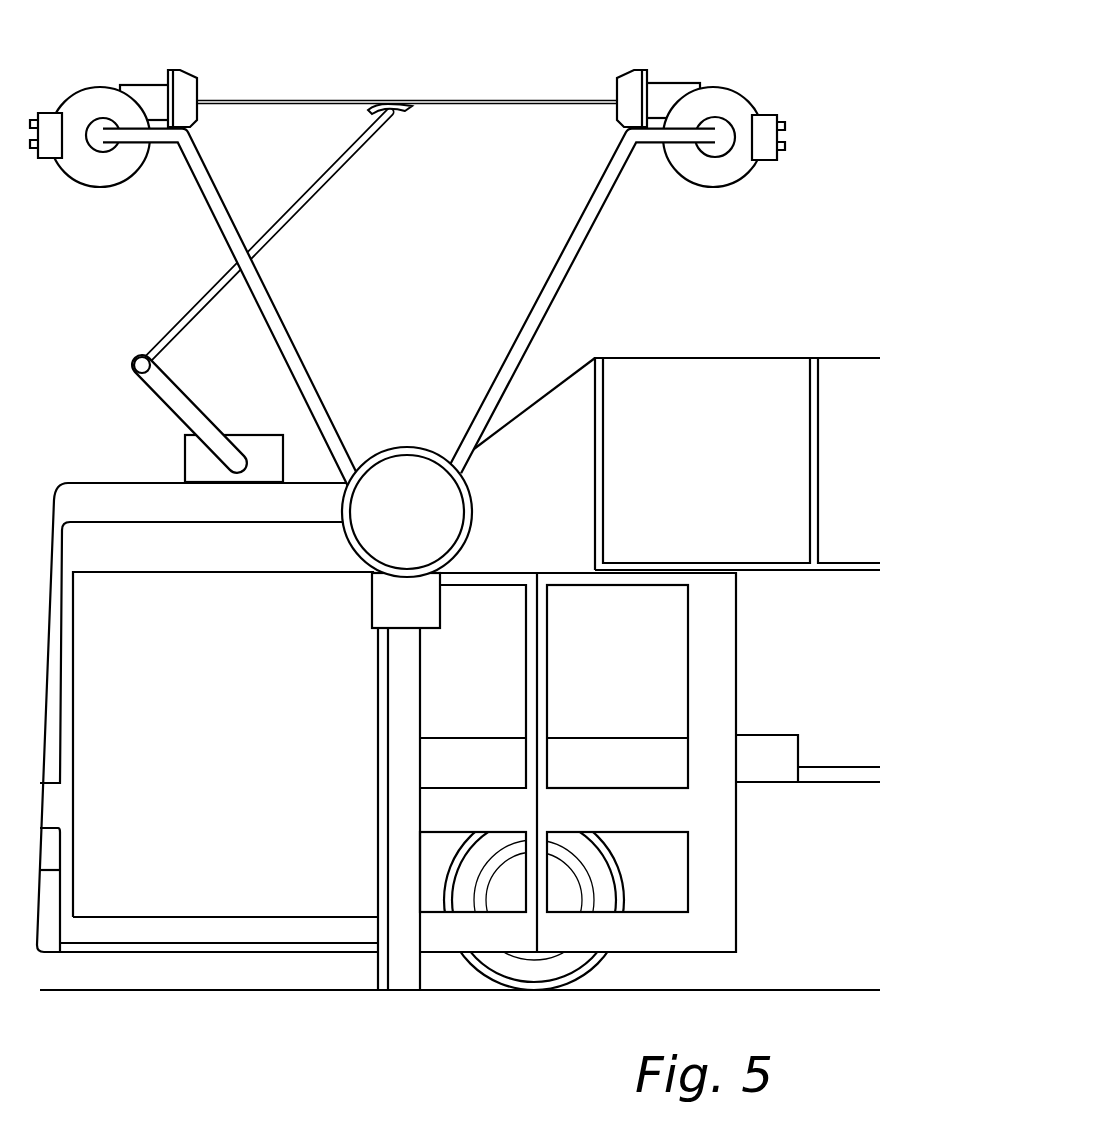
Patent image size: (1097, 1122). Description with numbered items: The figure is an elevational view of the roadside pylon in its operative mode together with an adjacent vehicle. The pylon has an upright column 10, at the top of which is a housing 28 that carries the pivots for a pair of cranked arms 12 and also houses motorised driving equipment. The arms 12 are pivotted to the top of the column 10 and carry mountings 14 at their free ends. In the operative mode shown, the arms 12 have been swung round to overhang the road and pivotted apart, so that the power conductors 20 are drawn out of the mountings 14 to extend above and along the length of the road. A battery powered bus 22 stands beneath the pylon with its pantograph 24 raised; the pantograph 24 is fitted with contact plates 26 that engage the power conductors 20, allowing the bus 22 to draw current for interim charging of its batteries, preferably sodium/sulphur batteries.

The column 10 is at (422, 700).
The cranked arms 12 is at (572, 272).
The mountings 14 is at (745, 98).
The power conductors 20 is at (503, 102).
The battery powered bus 22 is at (707, 357).
The pantograph 24 is at (330, 207).
The contact plates 26 is at (412, 103).
The housing 28 is at (473, 518).